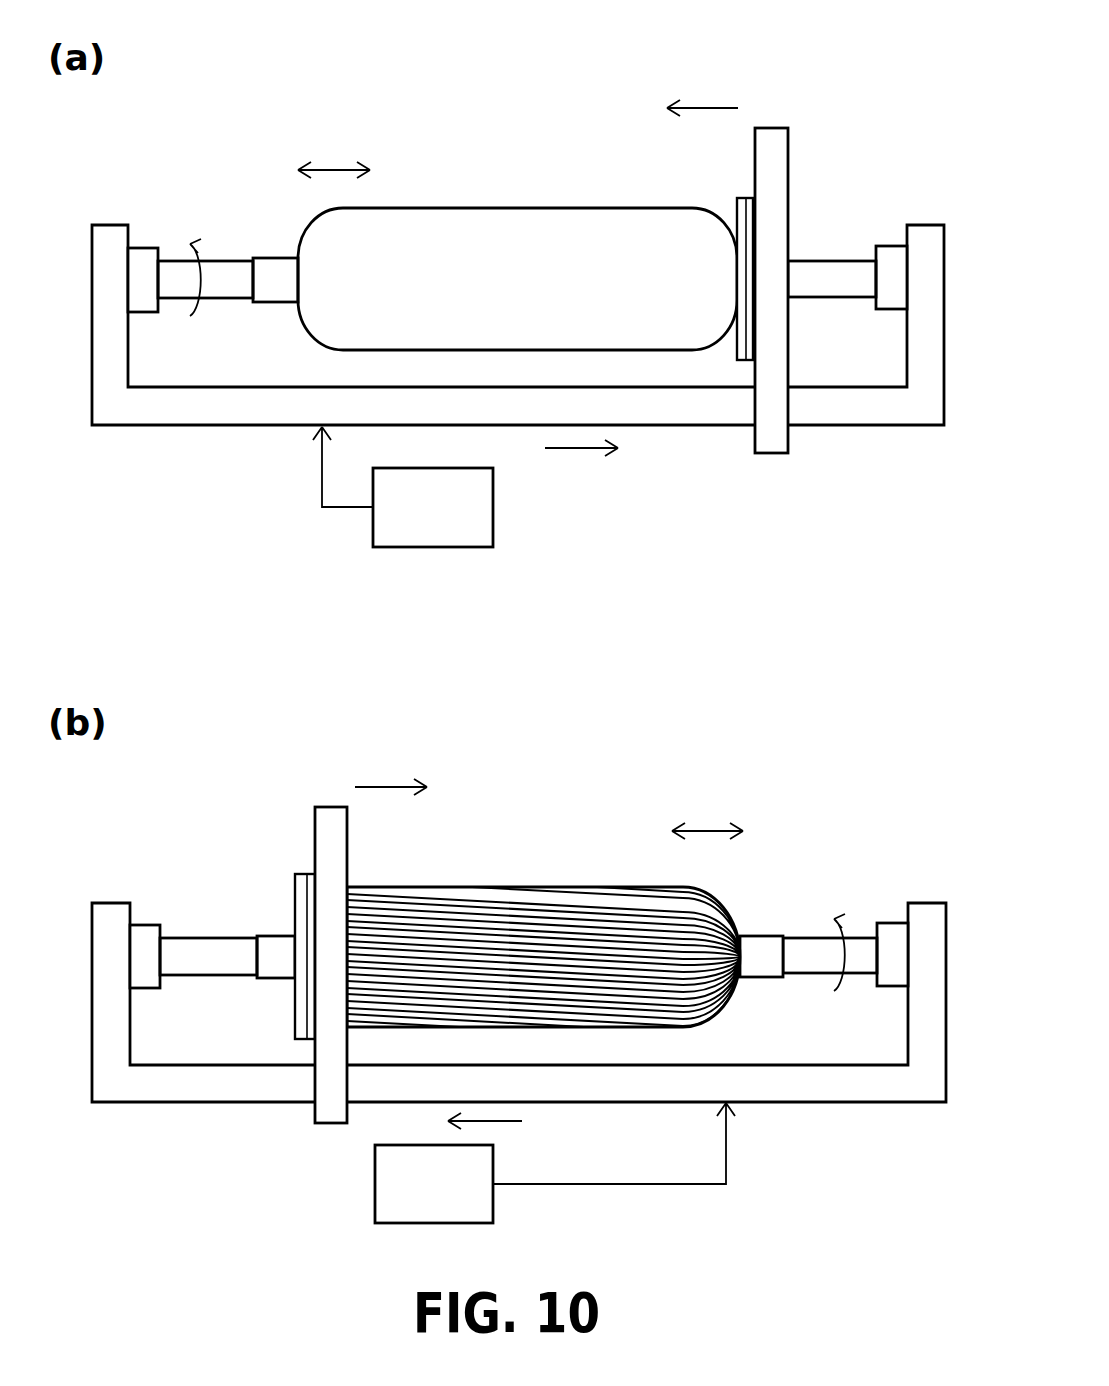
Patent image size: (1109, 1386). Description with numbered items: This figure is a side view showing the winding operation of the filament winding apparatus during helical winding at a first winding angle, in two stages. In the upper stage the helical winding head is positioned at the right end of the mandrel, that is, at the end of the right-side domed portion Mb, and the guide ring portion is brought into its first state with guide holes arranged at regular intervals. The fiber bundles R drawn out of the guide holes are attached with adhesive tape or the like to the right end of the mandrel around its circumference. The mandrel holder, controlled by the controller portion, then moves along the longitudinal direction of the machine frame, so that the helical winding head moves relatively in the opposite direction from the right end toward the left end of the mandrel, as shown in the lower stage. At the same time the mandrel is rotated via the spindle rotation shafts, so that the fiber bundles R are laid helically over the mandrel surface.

The domed portions Mb is at (703, 236).
The fiber bundles R is at (633, 900).